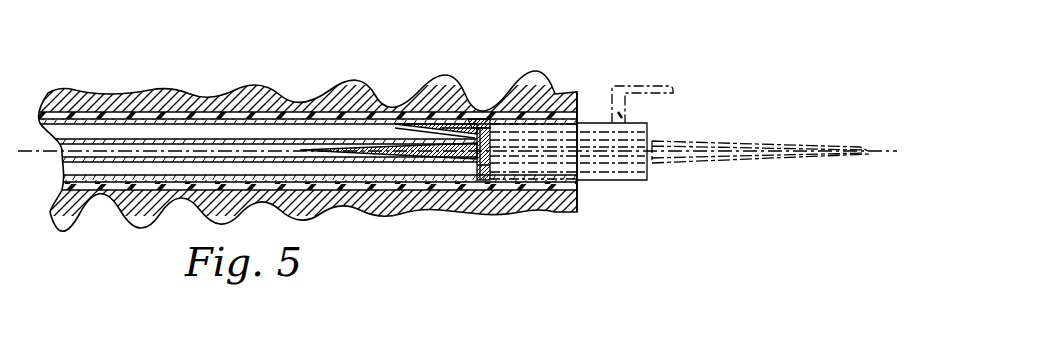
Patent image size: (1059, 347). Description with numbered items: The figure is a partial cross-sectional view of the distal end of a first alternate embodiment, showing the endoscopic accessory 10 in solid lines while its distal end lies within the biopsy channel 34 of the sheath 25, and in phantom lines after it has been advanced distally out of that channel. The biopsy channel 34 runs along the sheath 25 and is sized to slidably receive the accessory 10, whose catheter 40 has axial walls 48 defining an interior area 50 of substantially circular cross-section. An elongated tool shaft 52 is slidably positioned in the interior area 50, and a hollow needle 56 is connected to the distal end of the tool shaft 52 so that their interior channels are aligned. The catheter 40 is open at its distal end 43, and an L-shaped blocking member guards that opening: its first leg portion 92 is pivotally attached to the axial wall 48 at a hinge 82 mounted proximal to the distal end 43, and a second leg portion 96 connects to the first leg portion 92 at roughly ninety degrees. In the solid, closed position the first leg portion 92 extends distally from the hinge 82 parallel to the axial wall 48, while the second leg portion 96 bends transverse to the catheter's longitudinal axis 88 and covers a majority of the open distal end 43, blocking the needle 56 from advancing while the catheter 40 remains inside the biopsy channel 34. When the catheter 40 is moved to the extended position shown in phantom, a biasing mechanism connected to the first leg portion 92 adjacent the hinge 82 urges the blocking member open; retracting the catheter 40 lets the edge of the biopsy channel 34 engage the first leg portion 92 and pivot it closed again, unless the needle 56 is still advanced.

The endoscopic accessory 10 is at (580, 119).
The sheath 25 is at (137, 96).
The biopsy channel 34 is at (293, 117).
The catheter 40 is at (380, 119).
The distal end of the catheter 43 is at (510, 118).
The axial wall 48 is at (338, 125).
The interior area 50 is at (395, 135).
The tool shaft 52 is at (248, 158).
The hollow needle 56 is at (428, 158).
The hinge 82 is at (410, 128).
The longitudinal axis 88 is at (886, 152).
The first leg portion 92 is at (470, 122).
The second leg portion 96 is at (486, 165).